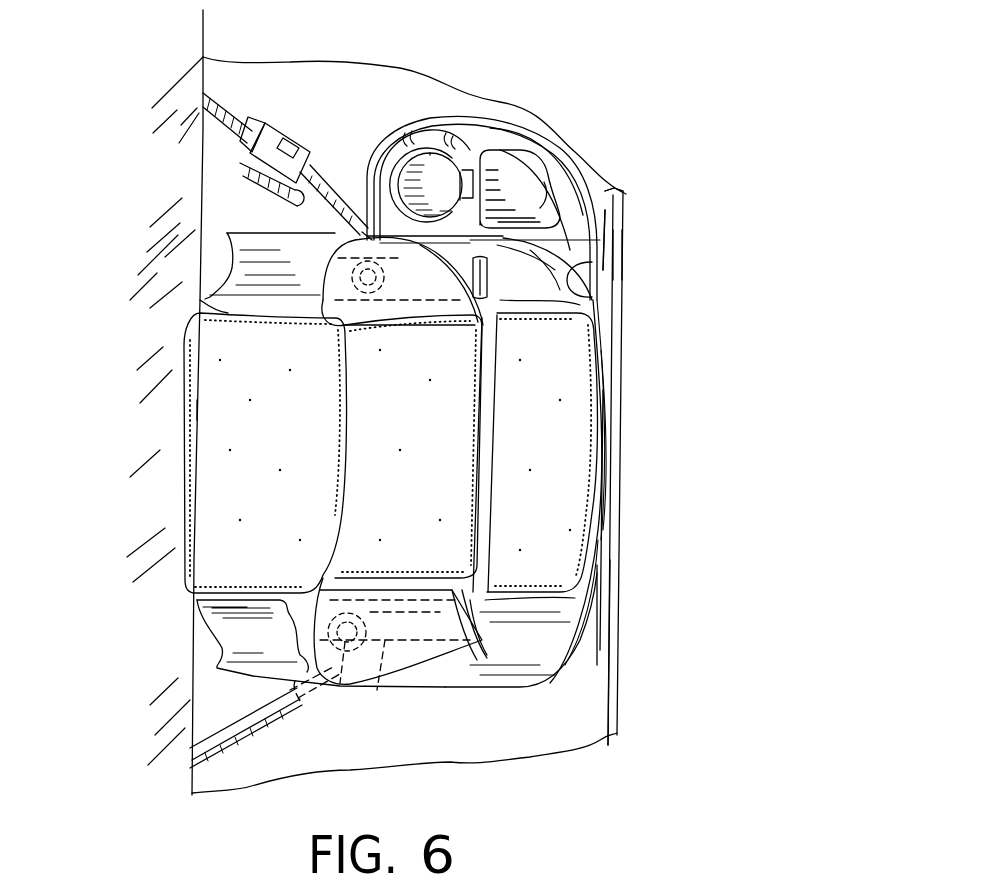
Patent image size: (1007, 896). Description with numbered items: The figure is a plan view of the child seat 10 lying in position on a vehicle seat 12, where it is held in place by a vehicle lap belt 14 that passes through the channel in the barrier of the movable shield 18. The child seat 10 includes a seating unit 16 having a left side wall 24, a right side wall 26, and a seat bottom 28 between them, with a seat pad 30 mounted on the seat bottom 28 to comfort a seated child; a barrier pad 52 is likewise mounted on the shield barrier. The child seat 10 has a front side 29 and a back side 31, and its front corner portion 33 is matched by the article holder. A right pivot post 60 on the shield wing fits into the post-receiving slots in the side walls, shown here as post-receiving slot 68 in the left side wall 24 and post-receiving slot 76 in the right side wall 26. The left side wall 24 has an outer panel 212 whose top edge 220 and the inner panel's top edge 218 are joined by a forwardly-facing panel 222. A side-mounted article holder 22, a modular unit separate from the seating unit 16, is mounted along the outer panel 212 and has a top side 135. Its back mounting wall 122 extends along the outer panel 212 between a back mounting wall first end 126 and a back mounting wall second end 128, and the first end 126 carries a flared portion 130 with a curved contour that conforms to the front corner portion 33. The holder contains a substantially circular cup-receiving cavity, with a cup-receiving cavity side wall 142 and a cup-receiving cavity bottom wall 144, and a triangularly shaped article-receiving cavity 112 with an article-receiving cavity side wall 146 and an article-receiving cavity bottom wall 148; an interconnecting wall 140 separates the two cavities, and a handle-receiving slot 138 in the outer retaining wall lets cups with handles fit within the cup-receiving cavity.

The child seat 10 is at (122, 446).
The vehicle seat 12 is at (428, 748).
The vehicle lap belt 14 is at (227, 110).
The seating unit 16 is at (585, 363).
The movable shield 18 is at (505, 640).
The side-mounted article holder 22 is at (598, 188).
The left side wall 24 is at (247, 232).
The right side wall 26 is at (487, 692).
The seat bottom 28 is at (612, 593).
The front side 29 is at (613, 392).
The seat pad 30 is at (577, 480).
The back side 31 is at (193, 313).
The front corner portion 33 is at (593, 273).
The barrier pad 52 is at (418, 496).
The right pivot post 60 is at (297, 690).
The post-receiving slot 68 is at (412, 303).
The post-receiving slot 76 is at (367, 693).
The article-receiving cavity 112 is at (548, 156).
The back mounting wall 122 is at (600, 217).
The back mounting wall first end 126 is at (583, 278).
The back mounting wall second end 128 is at (357, 227).
The flared portion 130 is at (593, 250).
The top side 135 is at (407, 127).
The handle-receiving slot 138 is at (447, 115).
The interconnecting wall 140 is at (528, 192).
The cup-receiving cavity side wall 142 is at (396, 165).
The cup-receiving cavity bottom wall 144 is at (437, 183).
The article-receiving cavity side wall 146 is at (515, 165).
The article-receiving cavity bottom wall 148 is at (585, 170).
The outer panel 212 is at (497, 234).
The top edge 218 is at (510, 308).
The top edge 220 is at (613, 207).
The forwardly-facing panel 222 is at (550, 277).